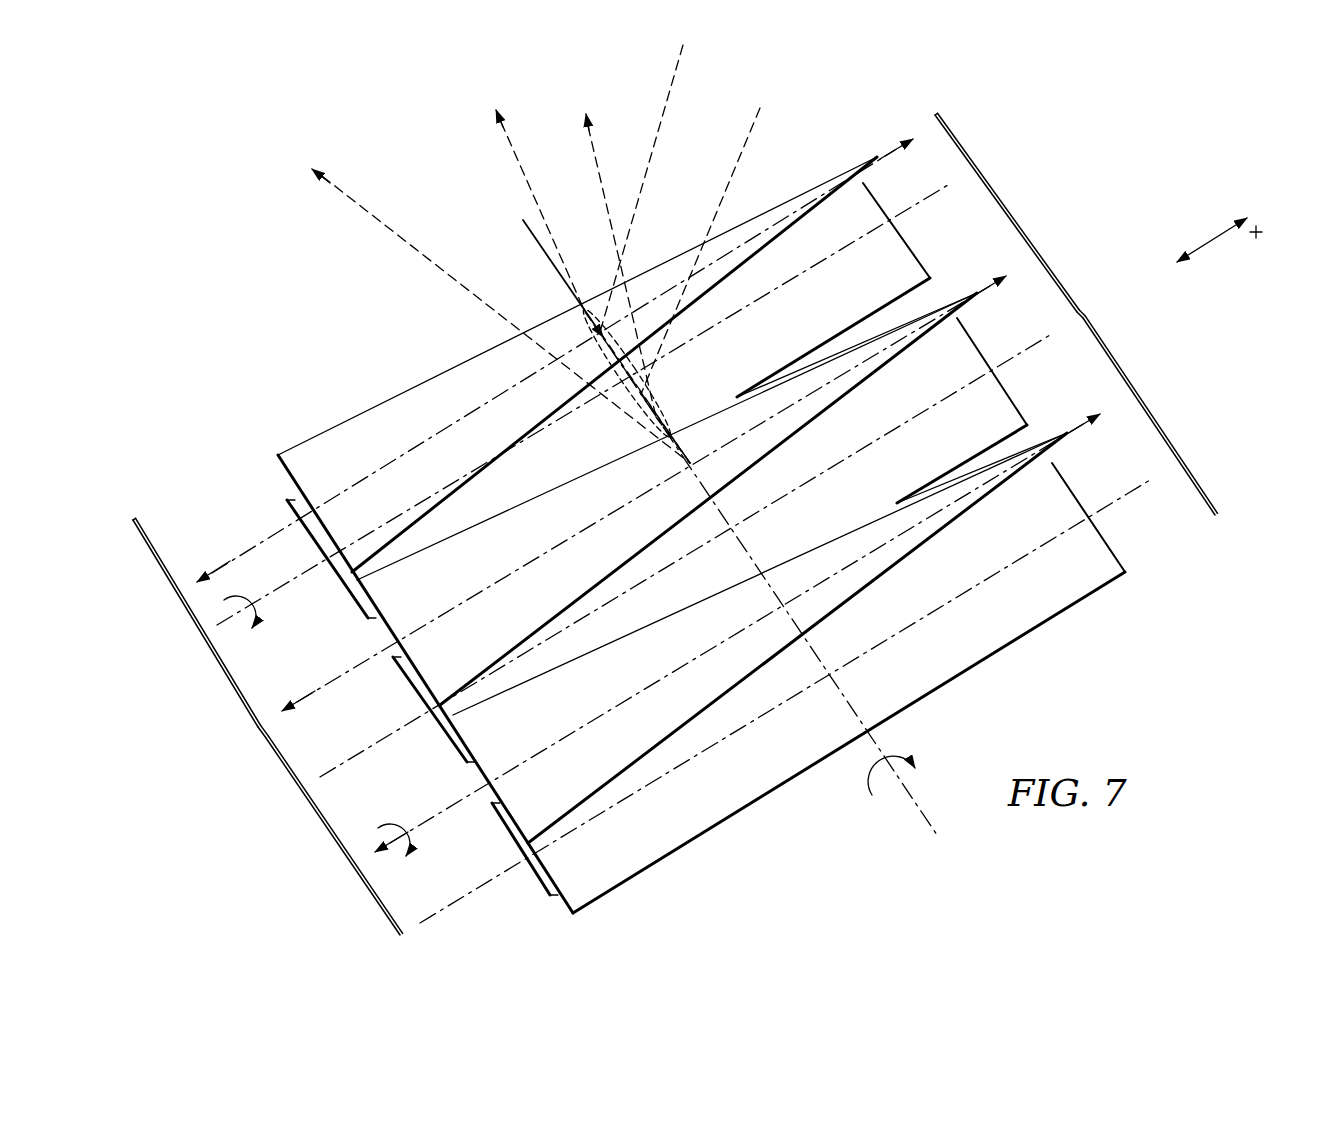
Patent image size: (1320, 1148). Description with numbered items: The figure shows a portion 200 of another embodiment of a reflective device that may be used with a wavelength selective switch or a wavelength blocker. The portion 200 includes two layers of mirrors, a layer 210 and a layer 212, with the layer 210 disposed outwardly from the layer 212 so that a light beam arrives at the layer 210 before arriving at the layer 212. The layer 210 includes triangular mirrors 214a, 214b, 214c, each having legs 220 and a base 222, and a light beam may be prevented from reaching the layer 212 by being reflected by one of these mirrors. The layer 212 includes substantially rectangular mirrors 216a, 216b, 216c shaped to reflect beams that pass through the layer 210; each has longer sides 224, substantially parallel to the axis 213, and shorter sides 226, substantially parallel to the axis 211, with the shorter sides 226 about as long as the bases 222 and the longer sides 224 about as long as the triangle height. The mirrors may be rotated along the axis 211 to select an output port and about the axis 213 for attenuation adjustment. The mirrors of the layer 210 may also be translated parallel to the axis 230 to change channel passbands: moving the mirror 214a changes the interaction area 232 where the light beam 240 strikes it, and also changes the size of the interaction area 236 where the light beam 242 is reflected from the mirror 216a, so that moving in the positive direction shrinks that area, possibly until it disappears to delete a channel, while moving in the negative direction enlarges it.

The portion of reflective device 200 is at (1060, 150).
The layer 210 is at (261, 734).
The axis 211 is at (923, 817).
The layer 212 is at (1086, 313).
The axis 213 is at (910, 210).
The mirror 214a is at (416, 381).
The mirror 214b is at (381, 632).
The mirror 214c is at (480, 773).
The mirror 216a is at (924, 260).
The mirror 216b is at (1022, 412).
The mirror 216c is at (1080, 608).
The legs 220 is at (342, 422).
The base 222 is at (283, 473).
The longer sides 224 is at (1045, 463).
The shorter sides 226 is at (1122, 560).
The axis 230 is at (1213, 237).
The interaction area 232 is at (580, 332).
The interaction area 236 is at (628, 400).
The light beam 240 is at (507, 150).
The light beam 242 is at (592, 153).